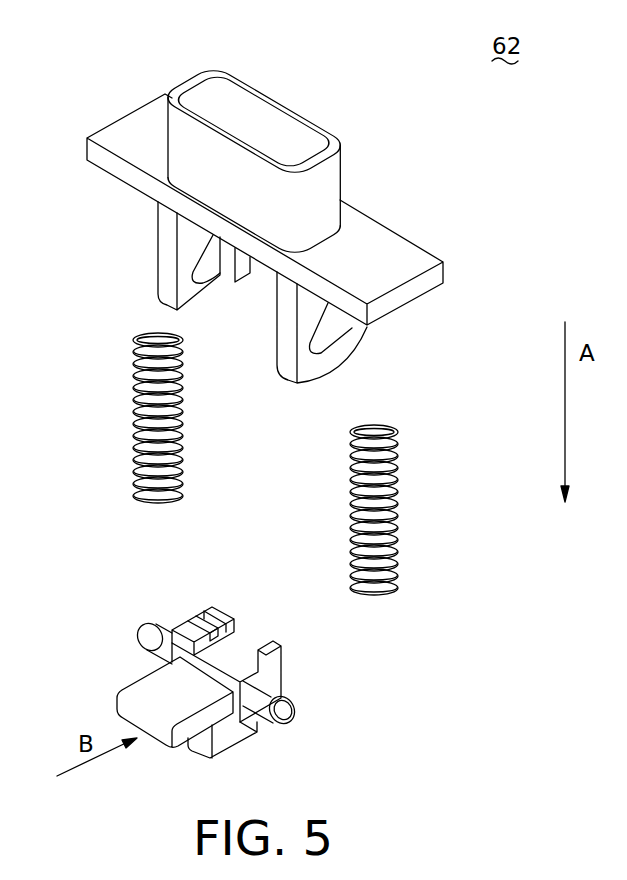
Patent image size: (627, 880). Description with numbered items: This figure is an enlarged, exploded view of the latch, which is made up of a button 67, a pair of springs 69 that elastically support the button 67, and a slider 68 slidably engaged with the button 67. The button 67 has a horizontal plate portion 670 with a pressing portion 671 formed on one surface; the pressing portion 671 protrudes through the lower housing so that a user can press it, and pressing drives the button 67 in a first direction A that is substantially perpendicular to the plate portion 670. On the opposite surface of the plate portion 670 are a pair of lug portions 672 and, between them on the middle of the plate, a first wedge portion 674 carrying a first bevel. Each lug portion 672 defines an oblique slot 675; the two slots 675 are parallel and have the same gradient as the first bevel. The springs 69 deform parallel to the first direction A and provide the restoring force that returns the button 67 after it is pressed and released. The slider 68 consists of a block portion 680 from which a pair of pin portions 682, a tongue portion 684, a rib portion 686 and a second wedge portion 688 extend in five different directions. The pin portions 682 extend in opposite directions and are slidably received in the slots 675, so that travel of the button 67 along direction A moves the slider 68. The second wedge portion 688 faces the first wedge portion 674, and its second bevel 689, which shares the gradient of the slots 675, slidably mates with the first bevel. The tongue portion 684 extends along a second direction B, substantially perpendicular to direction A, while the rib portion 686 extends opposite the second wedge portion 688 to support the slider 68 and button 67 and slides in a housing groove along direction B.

The button 67 is at (278, 238).
The plate portion 670 is at (415, 262).
The pressing portion 671 is at (287, 132).
The lug portions 672 is at (165, 258).
The first wedge portion 674 is at (242, 268).
The oblique slots 675 is at (320, 342).
The springs 69 is at (133, 412).
The slider 68 is at (218, 662).
The block portion 680 is at (197, 625).
The pin portions 682 is at (157, 636).
The tongue portion 684 is at (150, 692).
The rib portion 686 is at (228, 740).
The second wedge portion 688 is at (237, 611).
The second bevel 689 is at (236, 628).